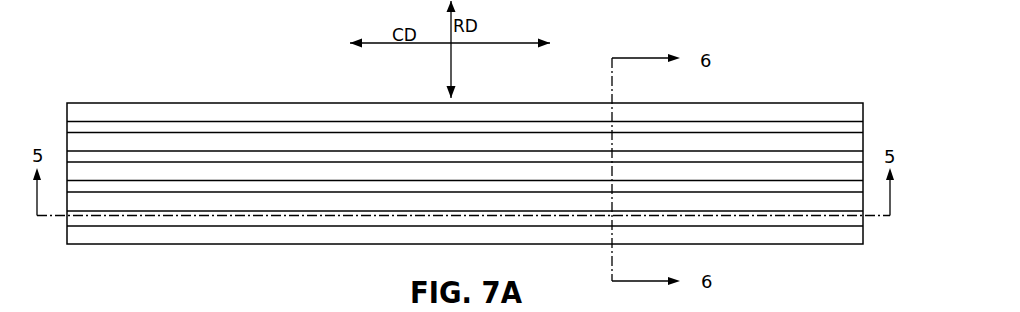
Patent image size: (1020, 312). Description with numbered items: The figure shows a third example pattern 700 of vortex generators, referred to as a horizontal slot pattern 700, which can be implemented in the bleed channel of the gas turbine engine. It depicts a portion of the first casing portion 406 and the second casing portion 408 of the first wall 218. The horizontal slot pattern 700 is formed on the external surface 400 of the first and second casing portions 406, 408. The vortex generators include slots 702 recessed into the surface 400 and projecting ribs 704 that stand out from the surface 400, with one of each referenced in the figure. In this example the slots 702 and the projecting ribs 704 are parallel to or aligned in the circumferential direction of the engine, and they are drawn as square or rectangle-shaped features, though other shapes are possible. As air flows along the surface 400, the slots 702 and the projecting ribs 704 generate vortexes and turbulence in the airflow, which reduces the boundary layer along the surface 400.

The horizontal slot pattern 700 is at (126, 30).
The second casing portion 408 is at (97, 117).
The slot 702 is at (159, 112).
The projecting rib 704 is at (197, 143).
The external surface 400 is at (254, 115).
The first wall 218 is at (323, 115).
The first casing portion 406 is at (95, 235).